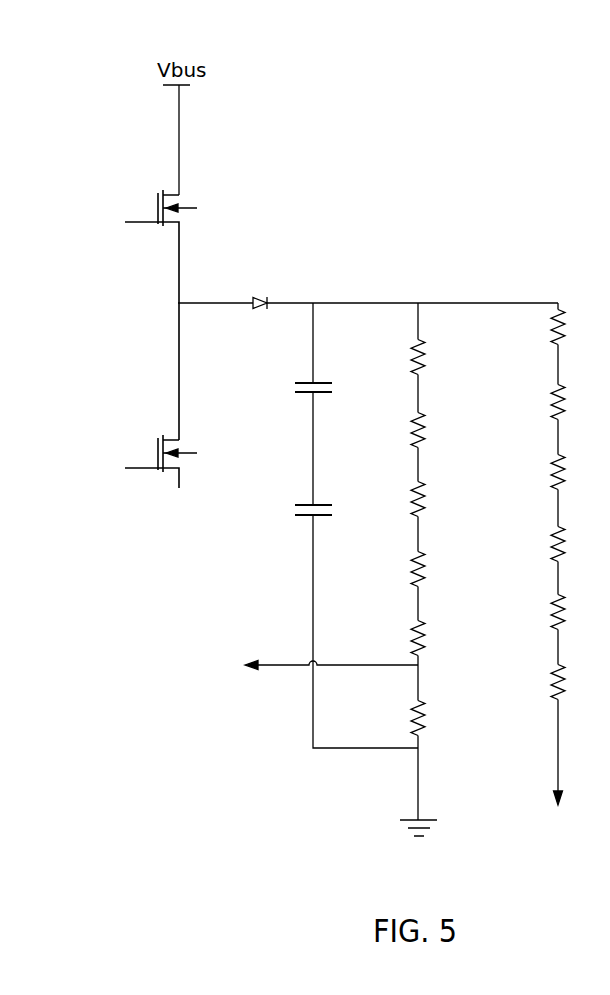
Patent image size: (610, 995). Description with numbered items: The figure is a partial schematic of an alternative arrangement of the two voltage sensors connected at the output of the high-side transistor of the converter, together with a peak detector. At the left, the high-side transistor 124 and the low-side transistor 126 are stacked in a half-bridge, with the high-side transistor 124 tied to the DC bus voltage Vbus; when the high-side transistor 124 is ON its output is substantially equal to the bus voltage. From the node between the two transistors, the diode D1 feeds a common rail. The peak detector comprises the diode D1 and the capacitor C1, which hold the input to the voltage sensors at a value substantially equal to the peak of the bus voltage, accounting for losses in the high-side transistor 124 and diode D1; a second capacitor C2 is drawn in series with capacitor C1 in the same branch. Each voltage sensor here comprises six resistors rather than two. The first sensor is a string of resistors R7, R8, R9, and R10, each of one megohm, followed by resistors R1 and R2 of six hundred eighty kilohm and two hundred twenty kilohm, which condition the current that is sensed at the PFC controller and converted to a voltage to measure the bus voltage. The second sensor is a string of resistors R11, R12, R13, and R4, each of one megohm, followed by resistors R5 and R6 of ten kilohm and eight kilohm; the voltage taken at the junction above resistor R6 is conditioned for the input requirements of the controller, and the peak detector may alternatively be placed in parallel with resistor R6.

The high-side transistor 124 is at (158, 208).
The low-side transistor 126 is at (158, 442).
The diode D1 is at (261, 294).
The capacitor C1 is at (299, 385).
The capacitor C2 is at (300, 508).
The resistor R1 is at (543, 612).
The resistor R2 is at (543, 682).
The resistor R4 is at (403, 569).
The resistor R5 is at (403, 638).
The resistor R6 is at (403, 718).
The resistor R7 is at (543, 327).
The resistor R8 is at (543, 402).
The resistor R9 is at (543, 472).
The resistor R10 is at (537, 544).
The resistor R11 is at (397, 357).
The resistor R12 is at (397, 430).
The resistor R13 is at (397, 499).